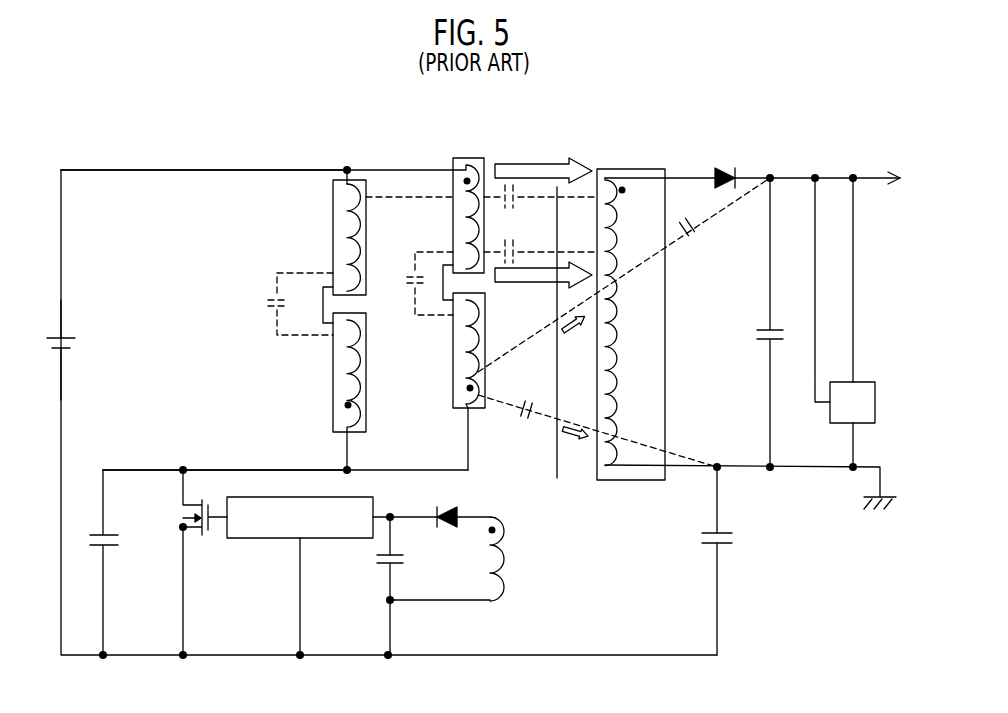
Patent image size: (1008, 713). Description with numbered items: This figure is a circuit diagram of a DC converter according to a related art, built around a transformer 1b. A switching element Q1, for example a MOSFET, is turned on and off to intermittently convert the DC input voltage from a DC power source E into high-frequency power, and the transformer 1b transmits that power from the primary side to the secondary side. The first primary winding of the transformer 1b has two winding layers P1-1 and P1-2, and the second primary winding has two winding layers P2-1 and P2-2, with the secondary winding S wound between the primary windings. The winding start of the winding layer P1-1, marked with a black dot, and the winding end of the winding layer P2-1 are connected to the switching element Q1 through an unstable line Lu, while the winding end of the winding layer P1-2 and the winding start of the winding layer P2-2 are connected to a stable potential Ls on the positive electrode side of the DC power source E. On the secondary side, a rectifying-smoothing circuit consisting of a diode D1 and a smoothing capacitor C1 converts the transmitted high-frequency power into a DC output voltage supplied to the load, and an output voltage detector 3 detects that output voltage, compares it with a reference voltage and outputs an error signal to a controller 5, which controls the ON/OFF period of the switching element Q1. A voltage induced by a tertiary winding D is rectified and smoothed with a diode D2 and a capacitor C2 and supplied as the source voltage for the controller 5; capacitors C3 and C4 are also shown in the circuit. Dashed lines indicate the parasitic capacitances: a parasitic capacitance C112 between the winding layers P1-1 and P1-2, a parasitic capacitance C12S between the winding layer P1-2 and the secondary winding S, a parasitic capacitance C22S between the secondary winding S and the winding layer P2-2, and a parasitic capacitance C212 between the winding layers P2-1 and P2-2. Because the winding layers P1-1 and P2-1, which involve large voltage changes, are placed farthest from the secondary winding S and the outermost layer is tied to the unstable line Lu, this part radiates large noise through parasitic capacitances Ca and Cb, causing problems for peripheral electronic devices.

The transformer 1b is at (557, 157).
The output voltage detector 3 is at (875, 401).
The controller 5 is at (262, 540).
The DC power source E is at (73, 350).
The stable potential Ls is at (200, 170).
The unstable line Lu is at (202, 468).
The winding layer P1-1 is at (316, 372).
The winding layer P1-2 is at (316, 251).
The winding layer P2-1 is at (445, 369).
The winding layer P2-2 is at (454, 214).
The secondary winding S is at (631, 324).
The parasitic capacitance C112 is at (266, 303).
The parasitic capacitance C212 is at (405, 285).
The parasitic capacitance C12S is at (512, 184).
The parasitic capacitance C22S is at (540, 240).
The parasitic capacitance Ca is at (624, 275).
The parasitic capacitance Cb is at (597, 431).
The smoothing capacitor C1 is at (760, 322).
The capacitor C2 is at (370, 586).
The input capacitor C3 is at (118, 562).
The capacitor C4 is at (731, 561).
The diode D1 is at (725, 163).
The diode D2 is at (445, 508).
The tertiary winding D is at (447, 559).
The switching element Q1 is at (206, 562).